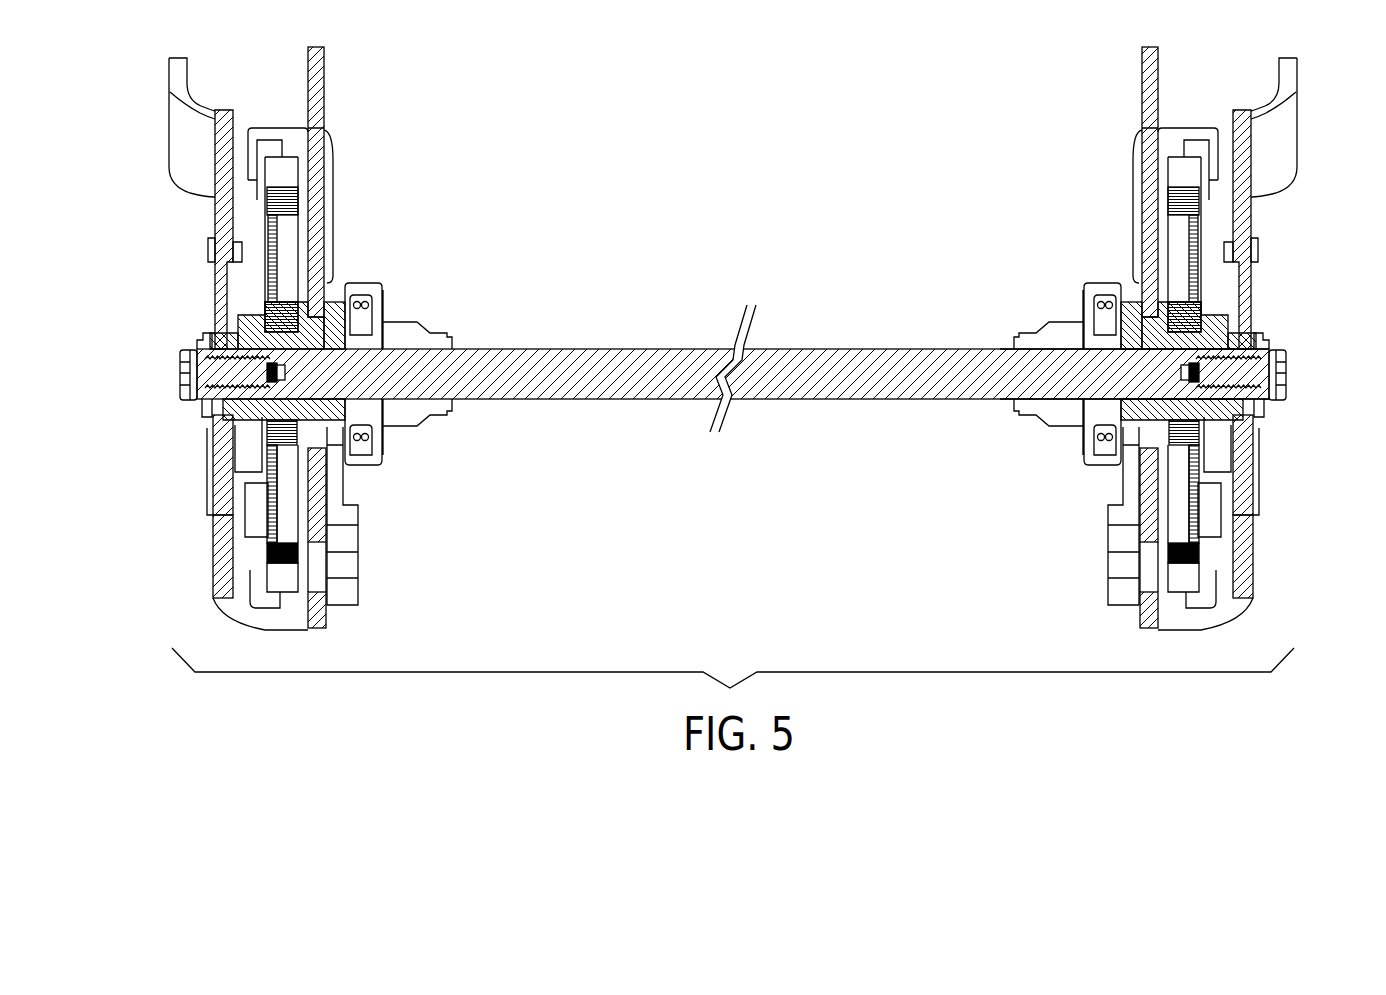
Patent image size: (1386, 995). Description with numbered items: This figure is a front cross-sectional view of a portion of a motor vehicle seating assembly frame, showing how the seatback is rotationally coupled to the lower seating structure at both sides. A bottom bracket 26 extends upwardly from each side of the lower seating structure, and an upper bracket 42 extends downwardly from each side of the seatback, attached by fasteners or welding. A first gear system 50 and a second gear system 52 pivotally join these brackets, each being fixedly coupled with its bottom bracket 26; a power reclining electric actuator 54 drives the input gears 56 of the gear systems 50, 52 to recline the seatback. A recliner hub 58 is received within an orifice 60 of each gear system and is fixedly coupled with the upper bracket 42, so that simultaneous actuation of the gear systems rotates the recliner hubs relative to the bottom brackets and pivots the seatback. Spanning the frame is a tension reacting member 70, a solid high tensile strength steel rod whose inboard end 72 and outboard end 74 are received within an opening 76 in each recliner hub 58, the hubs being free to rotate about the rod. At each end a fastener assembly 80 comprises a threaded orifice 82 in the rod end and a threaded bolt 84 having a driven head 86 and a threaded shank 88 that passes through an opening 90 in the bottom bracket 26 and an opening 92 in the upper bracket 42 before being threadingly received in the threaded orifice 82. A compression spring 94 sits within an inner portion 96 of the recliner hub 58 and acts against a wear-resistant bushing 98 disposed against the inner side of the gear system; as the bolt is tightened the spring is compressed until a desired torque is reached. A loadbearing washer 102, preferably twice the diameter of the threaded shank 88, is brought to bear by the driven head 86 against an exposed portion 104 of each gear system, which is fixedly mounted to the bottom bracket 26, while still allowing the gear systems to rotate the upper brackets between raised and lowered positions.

The bottom bracket 26 is at (220, 558).
The upper bracket 42 is at (313, 190).
The first gear system 50 is at (1250, 442).
The second gear system 52 is at (218, 442).
The power reclining electric actuator 54 is at (350, 540).
The input gear 56 is at (214, 190).
The recliner hub 58 is at (355, 325).
The orifice 60 is at (335, 400).
The tension reacting member 70 is at (752, 393).
The inboard end 72 is at (1148, 366).
The outboard end 74 is at (400, 335).
The opening 76 is at (425, 412).
The fastener assembly 80 is at (171, 345).
The threaded orifice 82 is at (181, 370).
The threaded bolt 84 is at (214, 345).
The driven head 86 is at (198, 345).
The threaded shank 88 is at (240, 378).
The opening 90 is at (183, 383).
The opening 92 is at (352, 446).
The compression spring 94 is at (362, 436).
The inner portion 96 is at (362, 288).
The bushing 98 is at (330, 295).
The loadbearing washer 102 is at (205, 408).
The exposed portion 104 is at (228, 440).